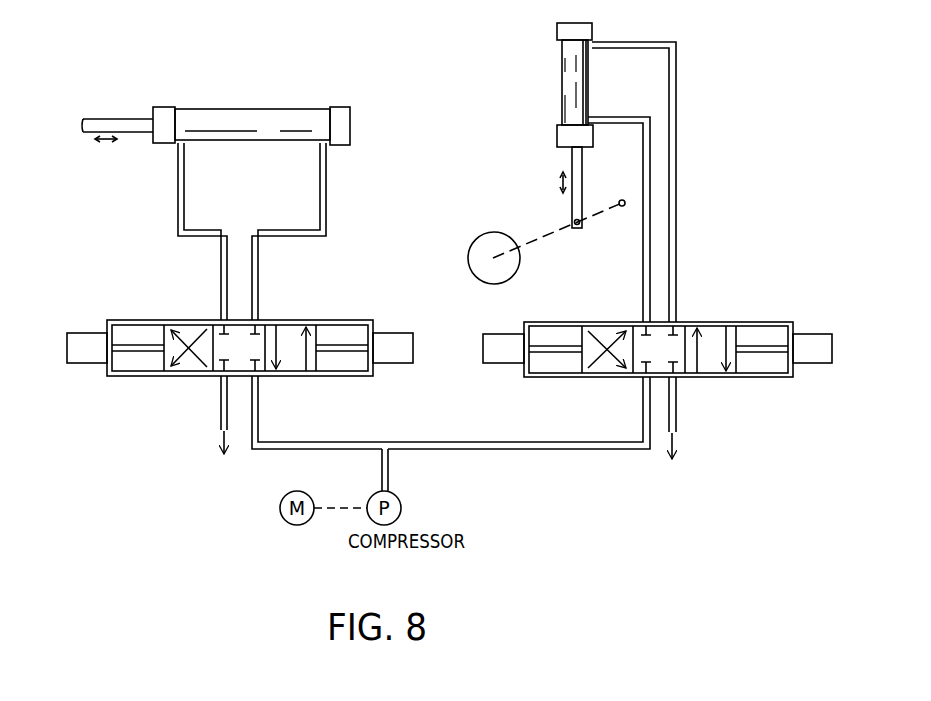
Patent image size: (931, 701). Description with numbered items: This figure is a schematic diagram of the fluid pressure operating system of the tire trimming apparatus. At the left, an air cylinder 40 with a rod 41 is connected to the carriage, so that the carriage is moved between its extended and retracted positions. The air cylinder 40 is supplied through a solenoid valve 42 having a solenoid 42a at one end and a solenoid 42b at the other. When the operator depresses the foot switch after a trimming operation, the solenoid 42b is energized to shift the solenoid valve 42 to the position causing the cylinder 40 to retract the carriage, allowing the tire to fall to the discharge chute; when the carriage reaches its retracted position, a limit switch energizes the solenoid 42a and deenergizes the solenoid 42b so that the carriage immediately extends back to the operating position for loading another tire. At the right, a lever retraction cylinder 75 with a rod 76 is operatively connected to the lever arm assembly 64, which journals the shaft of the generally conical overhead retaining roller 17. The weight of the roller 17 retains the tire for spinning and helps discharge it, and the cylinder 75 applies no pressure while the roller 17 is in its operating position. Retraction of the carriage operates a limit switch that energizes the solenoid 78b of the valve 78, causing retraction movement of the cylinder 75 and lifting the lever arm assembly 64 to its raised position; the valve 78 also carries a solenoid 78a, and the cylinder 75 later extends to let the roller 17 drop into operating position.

The overhead retaining roller 17 is at (487, 235).
The air cylinder 40 is at (262, 118).
The rod 41 is at (125, 120).
The solenoid valve 42 is at (186, 312).
The solenoid 42a is at (80, 363).
The solenoid 42b is at (393, 363).
The lever arm assembly 64 is at (543, 238).
The lever retraction cylinder 75 is at (569, 74).
The rod 76 is at (582, 165).
The valve 78 is at (718, 312).
The solenoid 78a is at (497, 363).
The solenoid 78b is at (812, 363).